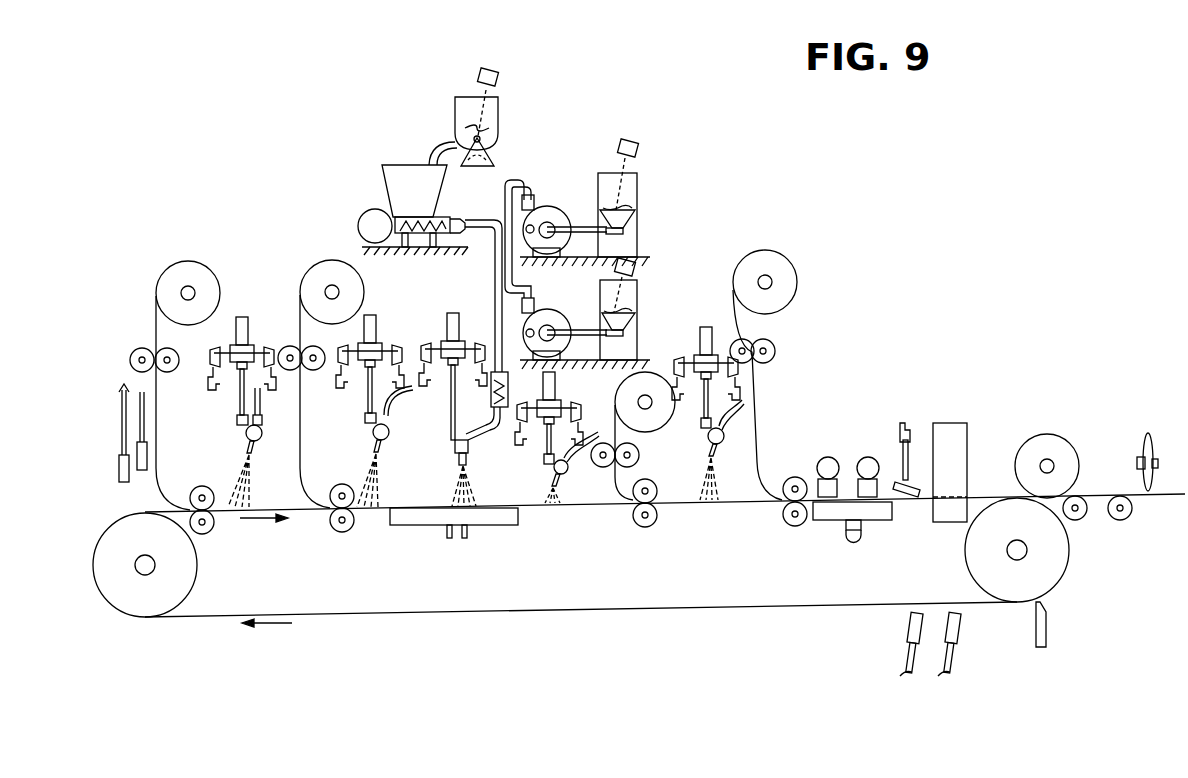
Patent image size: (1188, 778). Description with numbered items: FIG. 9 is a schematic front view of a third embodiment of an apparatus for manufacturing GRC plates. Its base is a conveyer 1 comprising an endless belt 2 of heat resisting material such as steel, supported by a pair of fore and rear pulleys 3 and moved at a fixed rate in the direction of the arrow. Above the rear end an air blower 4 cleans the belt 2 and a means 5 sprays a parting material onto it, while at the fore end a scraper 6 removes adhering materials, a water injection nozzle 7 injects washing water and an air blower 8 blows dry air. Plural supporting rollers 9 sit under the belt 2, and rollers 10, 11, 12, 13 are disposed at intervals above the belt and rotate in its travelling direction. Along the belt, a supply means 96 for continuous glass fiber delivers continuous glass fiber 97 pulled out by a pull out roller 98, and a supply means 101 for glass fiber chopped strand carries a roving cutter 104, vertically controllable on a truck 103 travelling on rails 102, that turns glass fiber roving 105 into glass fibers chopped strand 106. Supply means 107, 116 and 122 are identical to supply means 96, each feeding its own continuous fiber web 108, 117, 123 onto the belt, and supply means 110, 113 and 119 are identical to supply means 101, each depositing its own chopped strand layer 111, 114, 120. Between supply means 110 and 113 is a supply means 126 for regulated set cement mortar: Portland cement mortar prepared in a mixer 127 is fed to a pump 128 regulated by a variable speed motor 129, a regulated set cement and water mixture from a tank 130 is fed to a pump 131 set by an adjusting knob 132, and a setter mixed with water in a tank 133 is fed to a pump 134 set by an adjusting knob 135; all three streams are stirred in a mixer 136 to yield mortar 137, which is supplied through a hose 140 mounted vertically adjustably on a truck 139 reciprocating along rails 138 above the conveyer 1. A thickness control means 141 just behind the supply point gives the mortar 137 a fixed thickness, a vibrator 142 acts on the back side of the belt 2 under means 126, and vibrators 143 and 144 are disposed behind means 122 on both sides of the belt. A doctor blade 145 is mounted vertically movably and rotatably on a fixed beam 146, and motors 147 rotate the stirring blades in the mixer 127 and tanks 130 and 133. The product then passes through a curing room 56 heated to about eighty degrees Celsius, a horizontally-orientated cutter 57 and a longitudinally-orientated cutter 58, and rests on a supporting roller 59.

The conveyer 1 is at (570, 620).
The endless belt 2 is at (392, 616).
The pulleys 3 is at (125, 600).
The air blower 4 is at (137, 462).
The parting material spraying means 5 is at (120, 440).
The scraper 6 is at (1047, 628).
The water injection nozzle 7 is at (962, 628).
The air blower 8 is at (908, 630).
The supporting rollers 9 is at (202, 535).
The roller 10 is at (202, 484).
The roller 11 is at (340, 482).
The roller 12 is at (648, 485).
The roller 13 is at (793, 478).
The curing room 56 is at (950, 420).
The horizontally-orientated cutter 57 is at (1047, 440).
The longitudinally-orientated cutter 58 is at (1145, 440).
The supporting roller 59 is at (1078, 521).
The supply means for continuous glass fiber 96 is at (188, 252).
The continuous glass fiber 97 is at (158, 486).
The pull out roller 98 is at (142, 347).
The supply means for glass fiber chopped strand 101 is at (248, 372).
The rails 102 is at (237, 418).
The truck 103 is at (250, 345).
The roving cutter 104 is at (252, 445).
The glass fiber roving 105 is at (262, 415).
The glass fibers chopped strand 106 is at (248, 480).
The supply means for continuous glass fiber 107 is at (325, 252).
The web 108 is at (302, 418).
The supply means for glass fiber chopped strand 110 is at (395, 383).
The spray 111 is at (385, 462).
The supply means for glass fiber chopped strand 113 is at (567, 457).
The spray 114 is at (548, 506).
The supply means for continuous glass fiber 116 is at (650, 368).
The hose 117 is at (565, 490).
The supply means for glass fiber chopped strand 119 is at (708, 411).
The spray 120 is at (716, 505).
The supply means for continuous glass fiber 122 is at (768, 245).
The web 123 is at (760, 397).
The supply means for regulated set cement mortar 126 is at (466, 380).
The mixer 127 is at (498, 105).
The pump 128 is at (434, 190).
The variable speed motor 129 is at (370, 214).
The tank 130 is at (637, 190).
The pump 131 is at (560, 215).
The adjusting knob 132 is at (526, 200).
The tank 133 is at (637, 298).
The pump 134 is at (562, 325).
The adjusting knob 135 is at (534, 305).
The mixer 136 is at (510, 420).
The regulated set cement mortar 137 is at (372, 488).
The rails 138 is at (400, 392).
The truck 139 is at (375, 312).
The hose 140 is at (388, 428).
The thickness control means 141 is at (470, 450).
The vibrator 142 is at (498, 530).
The vibrator 143 is at (828, 455).
The vibrator 144 is at (822, 522).
The doctor blade 145 is at (908, 500).
The fixed beam 146 is at (899, 424).
The motors 147 is at (498, 78).